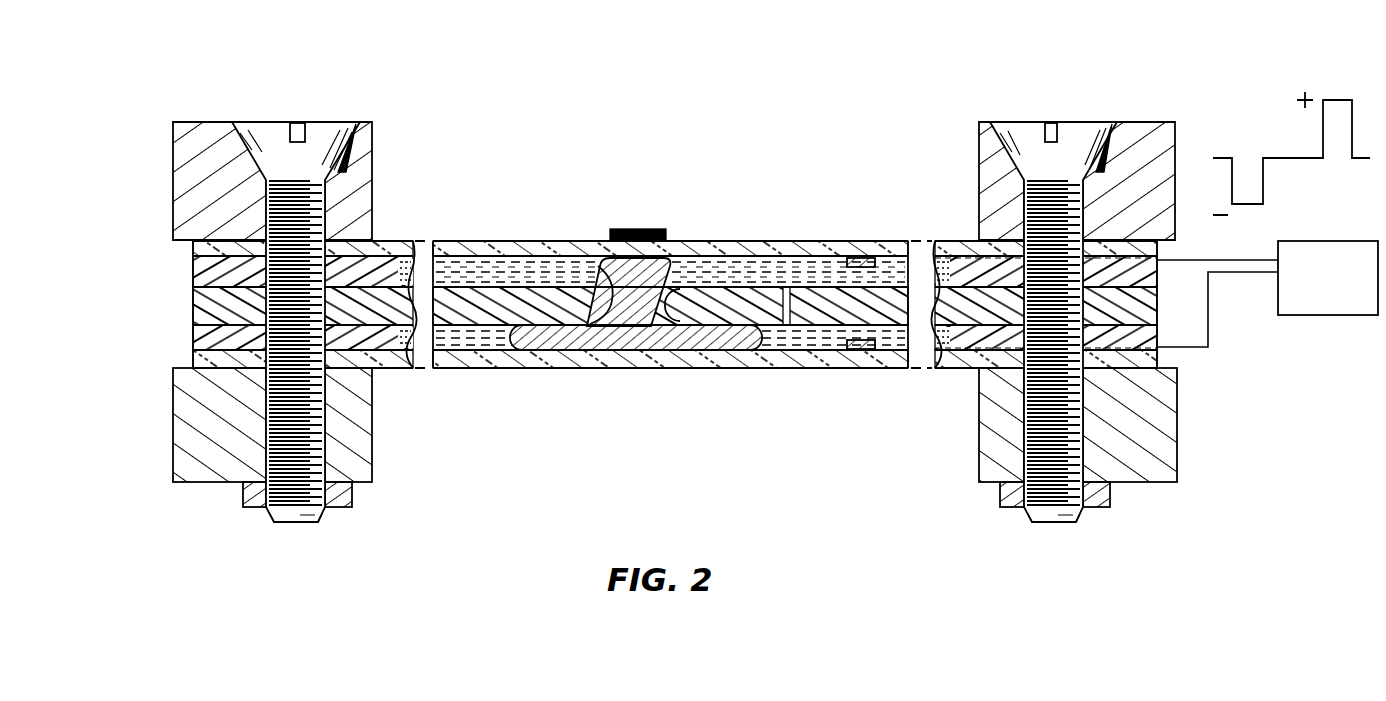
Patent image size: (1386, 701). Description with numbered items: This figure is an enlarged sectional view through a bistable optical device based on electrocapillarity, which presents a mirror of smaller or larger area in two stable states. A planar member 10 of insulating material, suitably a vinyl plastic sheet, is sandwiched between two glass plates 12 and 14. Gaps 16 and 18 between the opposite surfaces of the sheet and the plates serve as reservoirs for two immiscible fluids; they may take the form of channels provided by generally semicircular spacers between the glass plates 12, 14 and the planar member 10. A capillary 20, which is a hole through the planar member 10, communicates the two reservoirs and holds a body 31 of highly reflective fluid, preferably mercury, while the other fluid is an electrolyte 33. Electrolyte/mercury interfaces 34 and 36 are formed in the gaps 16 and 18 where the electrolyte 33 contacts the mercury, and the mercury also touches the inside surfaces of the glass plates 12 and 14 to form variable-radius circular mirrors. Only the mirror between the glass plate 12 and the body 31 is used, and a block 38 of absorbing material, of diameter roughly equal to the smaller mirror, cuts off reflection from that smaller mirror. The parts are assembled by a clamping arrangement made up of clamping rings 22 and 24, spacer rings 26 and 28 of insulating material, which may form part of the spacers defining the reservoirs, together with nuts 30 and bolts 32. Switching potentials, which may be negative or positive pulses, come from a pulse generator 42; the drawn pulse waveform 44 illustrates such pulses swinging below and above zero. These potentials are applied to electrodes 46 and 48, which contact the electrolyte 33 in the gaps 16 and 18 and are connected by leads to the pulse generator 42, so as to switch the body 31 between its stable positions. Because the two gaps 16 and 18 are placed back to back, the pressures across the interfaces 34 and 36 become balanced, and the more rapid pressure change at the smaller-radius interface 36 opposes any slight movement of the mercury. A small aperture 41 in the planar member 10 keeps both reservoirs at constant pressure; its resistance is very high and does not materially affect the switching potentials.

The planar member 10 is at (458, 292).
The glass plate 12 is at (747, 240).
The glass plate 14 is at (690, 360).
The gap 16 is at (500, 265).
The gap 18 is at (460, 345).
The capillary 20 is at (676, 291).
The clamping ring 22 is at (372, 128).
The clamping ring 24 is at (372, 430).
The spacer ring 26 is at (193, 268).
The spacer ring 28 is at (193, 333).
The nut 30 is at (348, 499).
The body of fluid 31 is at (635, 340).
The bolt 32 is at (326, 122).
The electrolyte 33 is at (800, 262).
The electrolyte/mercury interface 34 is at (600, 268).
The electrolyte/mercury interface 36 is at (510, 342).
The block of absorbing material 38 is at (628, 229).
The small aperture 41 is at (783, 318).
The pulse generator 42 is at (1343, 314).
The pulse waveform 44 is at (1287, 159).
The electrode 46 is at (870, 258).
The electrode 48 is at (857, 350).